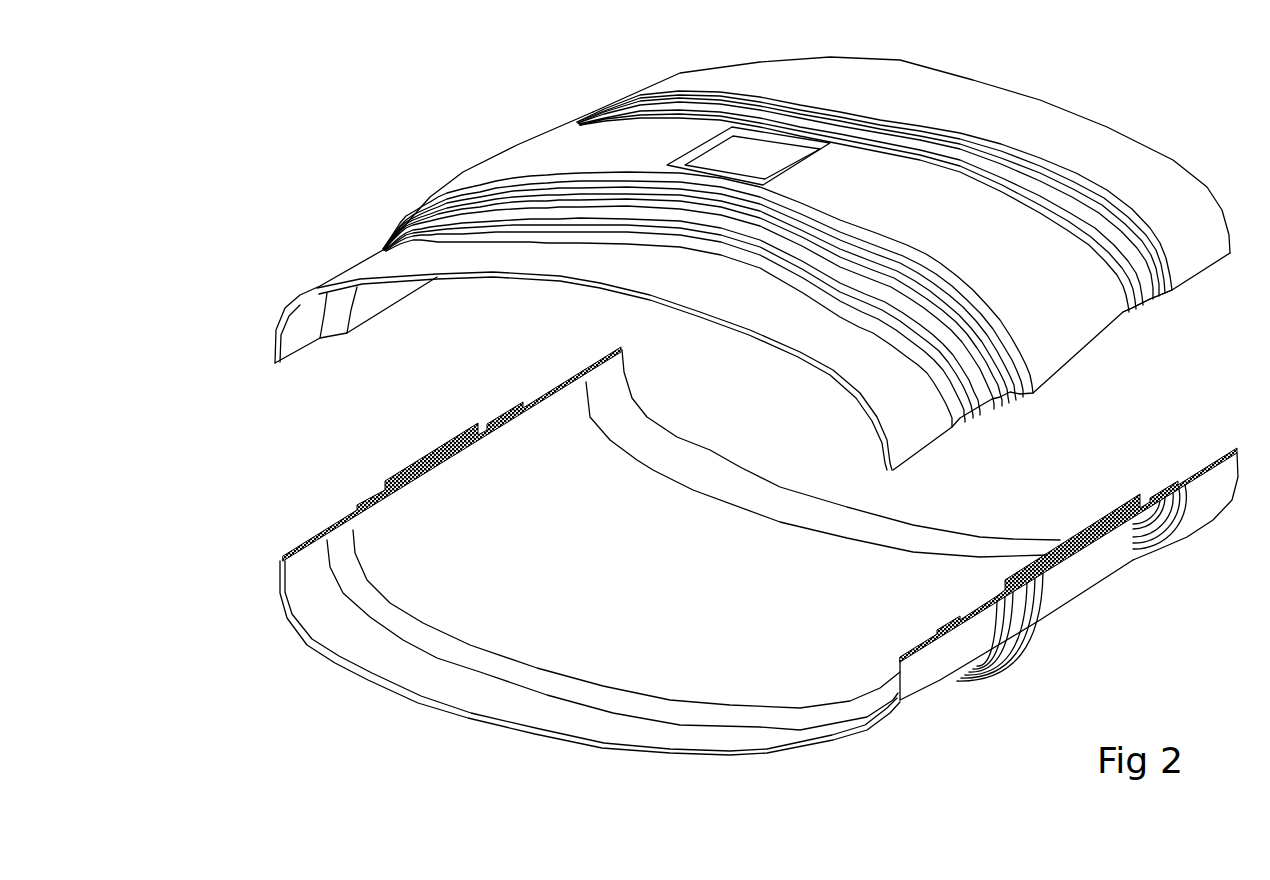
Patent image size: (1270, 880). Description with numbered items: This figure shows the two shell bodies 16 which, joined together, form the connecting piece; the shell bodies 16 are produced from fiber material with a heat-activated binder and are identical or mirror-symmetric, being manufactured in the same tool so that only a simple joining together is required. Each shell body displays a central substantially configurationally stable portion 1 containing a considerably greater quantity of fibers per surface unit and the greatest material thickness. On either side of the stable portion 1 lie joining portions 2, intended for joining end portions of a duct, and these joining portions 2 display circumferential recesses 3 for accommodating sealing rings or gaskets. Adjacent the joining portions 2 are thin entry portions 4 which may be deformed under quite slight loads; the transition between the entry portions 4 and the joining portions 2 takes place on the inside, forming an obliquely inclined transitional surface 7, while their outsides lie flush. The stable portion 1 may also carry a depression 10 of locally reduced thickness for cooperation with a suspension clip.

The substantially configurationally stable portion 1 is at (1077, 345).
The joining portion 2 is at (1145, 297).
The circumferential recess 3 is at (1155, 282).
The entry portion 4 is at (1077, 130).
The obliquely inclined transitional surface 7 is at (337, 303).
The depression 10 is at (777, 162).
The shell body 16 is at (358, 116).